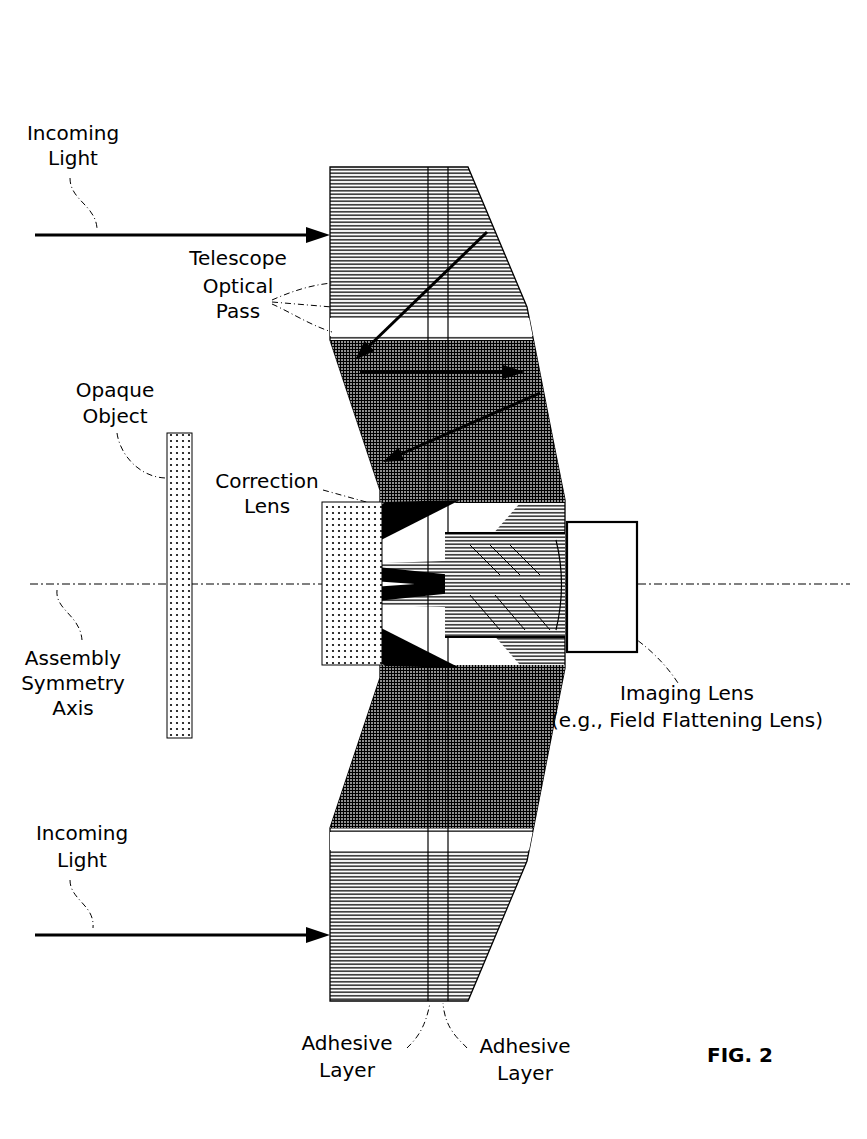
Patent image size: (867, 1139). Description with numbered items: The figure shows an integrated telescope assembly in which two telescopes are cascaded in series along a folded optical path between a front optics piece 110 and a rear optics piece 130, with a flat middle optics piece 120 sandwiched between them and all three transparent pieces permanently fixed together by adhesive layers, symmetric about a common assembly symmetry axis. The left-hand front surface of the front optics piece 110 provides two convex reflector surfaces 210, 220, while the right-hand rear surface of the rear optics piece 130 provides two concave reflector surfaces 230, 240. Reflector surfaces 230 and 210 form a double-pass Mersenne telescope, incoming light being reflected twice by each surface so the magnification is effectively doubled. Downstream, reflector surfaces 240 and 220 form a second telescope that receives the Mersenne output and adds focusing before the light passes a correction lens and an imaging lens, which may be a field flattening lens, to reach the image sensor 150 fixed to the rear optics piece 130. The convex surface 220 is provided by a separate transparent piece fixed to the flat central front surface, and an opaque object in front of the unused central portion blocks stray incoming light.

The front optics piece 110 is at (370, 165).
The middle optics piece 120 is at (435, 165).
The rear optics piece 130 is at (483, 178).
The image sensor 150 is at (622, 577).
The convex reflector surface 210 is at (378, 492).
The convex reflector surface 220 is at (327, 593).
The concave reflector surface 230 is at (576, 410).
The concave reflector surface 240 is at (574, 516).